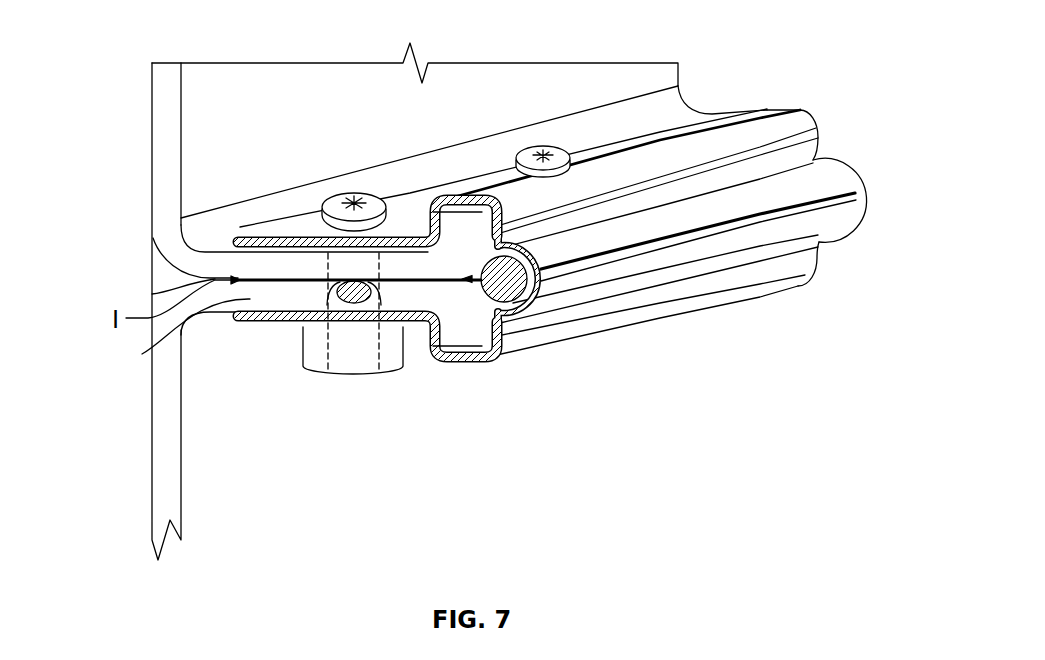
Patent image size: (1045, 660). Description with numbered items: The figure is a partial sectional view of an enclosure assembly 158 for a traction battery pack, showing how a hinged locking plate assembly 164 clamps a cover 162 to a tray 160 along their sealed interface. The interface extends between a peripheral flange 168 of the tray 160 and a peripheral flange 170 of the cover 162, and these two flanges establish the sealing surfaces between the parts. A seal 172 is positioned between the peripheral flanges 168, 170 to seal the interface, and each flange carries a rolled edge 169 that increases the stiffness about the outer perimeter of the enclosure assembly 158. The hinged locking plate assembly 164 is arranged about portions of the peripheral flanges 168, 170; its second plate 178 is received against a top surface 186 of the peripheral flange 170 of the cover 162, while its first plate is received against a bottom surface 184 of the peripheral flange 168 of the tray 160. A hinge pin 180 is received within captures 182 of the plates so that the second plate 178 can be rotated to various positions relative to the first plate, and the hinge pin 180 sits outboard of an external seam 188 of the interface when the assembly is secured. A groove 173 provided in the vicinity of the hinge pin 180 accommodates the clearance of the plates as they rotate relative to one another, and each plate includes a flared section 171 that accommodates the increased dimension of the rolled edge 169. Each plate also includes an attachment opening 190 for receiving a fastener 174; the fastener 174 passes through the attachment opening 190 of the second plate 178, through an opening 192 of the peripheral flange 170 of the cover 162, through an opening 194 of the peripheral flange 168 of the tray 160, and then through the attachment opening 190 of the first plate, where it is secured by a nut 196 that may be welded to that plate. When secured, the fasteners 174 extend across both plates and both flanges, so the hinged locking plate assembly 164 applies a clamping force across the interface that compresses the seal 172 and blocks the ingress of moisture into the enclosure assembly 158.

The enclosure assembly 158 is at (764, 50).
The tray 160 is at (147, 436).
The cover 162 is at (147, 156).
The hinged locking plate assembly 164 is at (672, 128).
The peripheral flange 168 is at (150, 353).
The rolled edge 169 is at (467, 222).
The peripheral flange 170 is at (227, 266).
The flared section 171 is at (695, 306).
The seal 172 is at (352, 303).
The groove 173 is at (758, 214).
The fastener 174 is at (425, 240).
The second plate 178 is at (458, 192).
The hinge pin 180 is at (510, 287).
The capture 182 is at (511, 232).
The bottom surface 184 is at (218, 313).
The top surface 186 is at (255, 246).
The external seam 188 is at (498, 205).
The attachment opening 190 is at (353, 192).
The opening 192 is at (270, 237).
The opening 194 is at (388, 345).
The nut 196 is at (395, 345).